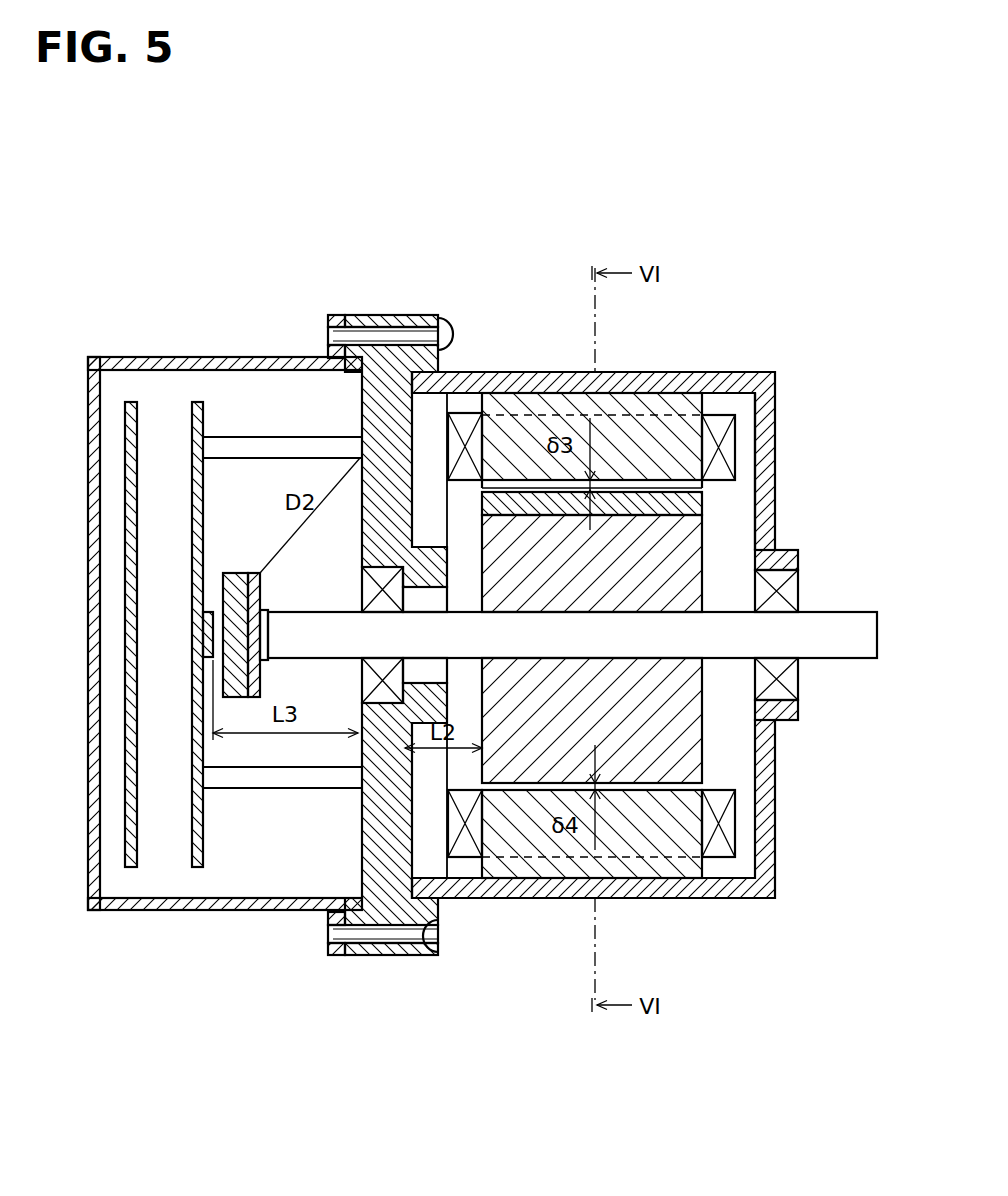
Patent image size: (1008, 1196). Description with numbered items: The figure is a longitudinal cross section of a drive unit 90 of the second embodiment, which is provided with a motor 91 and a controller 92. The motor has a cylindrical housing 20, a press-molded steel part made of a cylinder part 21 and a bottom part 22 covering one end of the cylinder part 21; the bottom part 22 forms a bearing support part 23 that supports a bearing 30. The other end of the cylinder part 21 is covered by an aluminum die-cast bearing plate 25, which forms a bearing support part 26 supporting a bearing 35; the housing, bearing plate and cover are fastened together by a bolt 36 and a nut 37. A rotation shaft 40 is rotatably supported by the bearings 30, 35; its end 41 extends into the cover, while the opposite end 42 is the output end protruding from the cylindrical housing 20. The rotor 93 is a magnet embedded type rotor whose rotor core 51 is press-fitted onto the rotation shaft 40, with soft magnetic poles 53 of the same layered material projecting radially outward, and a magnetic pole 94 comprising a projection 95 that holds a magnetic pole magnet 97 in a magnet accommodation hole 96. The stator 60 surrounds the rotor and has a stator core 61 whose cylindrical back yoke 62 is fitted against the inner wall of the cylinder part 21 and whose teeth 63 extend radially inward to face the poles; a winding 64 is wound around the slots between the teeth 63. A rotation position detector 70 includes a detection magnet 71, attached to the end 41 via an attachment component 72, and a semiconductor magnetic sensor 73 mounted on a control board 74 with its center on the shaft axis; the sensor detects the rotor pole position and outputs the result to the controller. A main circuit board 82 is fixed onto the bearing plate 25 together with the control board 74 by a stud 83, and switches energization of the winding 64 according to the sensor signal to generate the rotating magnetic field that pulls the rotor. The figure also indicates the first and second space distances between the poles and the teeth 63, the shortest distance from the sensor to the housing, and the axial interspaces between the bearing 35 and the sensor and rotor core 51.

The cylindrical housing 20 is at (778, 384).
The cylinder part 21 is at (543, 385).
The bottom part 22 is at (768, 460).
The bearing support part 23 is at (790, 562).
The bearing plate 25 is at (388, 315).
The bearing support part 26 is at (483, 660).
The bearing 30 is at (790, 594).
The bearing 35 is at (378, 925).
The bolt 36 is at (447, 340).
The nut 37 is at (337, 315).
The rotation shaft 40 is at (728, 665).
The end 41 is at (232, 645).
The end 42 is at (843, 645).
The rotor core 51 is at (703, 770).
The soft magnetic pole 53 is at (663, 768).
The stator 60 is at (738, 433).
The stator core 61 is at (640, 318).
The back yoke 62 is at (635, 403).
The teeth 63 is at (672, 445).
The winding 64 is at (468, 445).
The rotation position detector 70 is at (218, 588).
The detection magnet 71 is at (223, 599).
The attachment component 72 is at (247, 573).
The semiconductor magnetic sensor 73 is at (210, 637).
The control board 74 is at (196, 867).
The main circuit board 82 is at (130, 867).
The stud 83 is at (293, 448).
The drive unit 90 is at (107, 327).
The motor 91 is at (745, 345).
The controller 92 is at (210, 357).
The rotor 93 is at (617, 698).
The magnetic pole 94 is at (838, 487).
The projection 95 is at (700, 489).
The magnet accommodation hole 96 is at (522, 501).
The magnetic pole magnet 97 is at (700, 505).